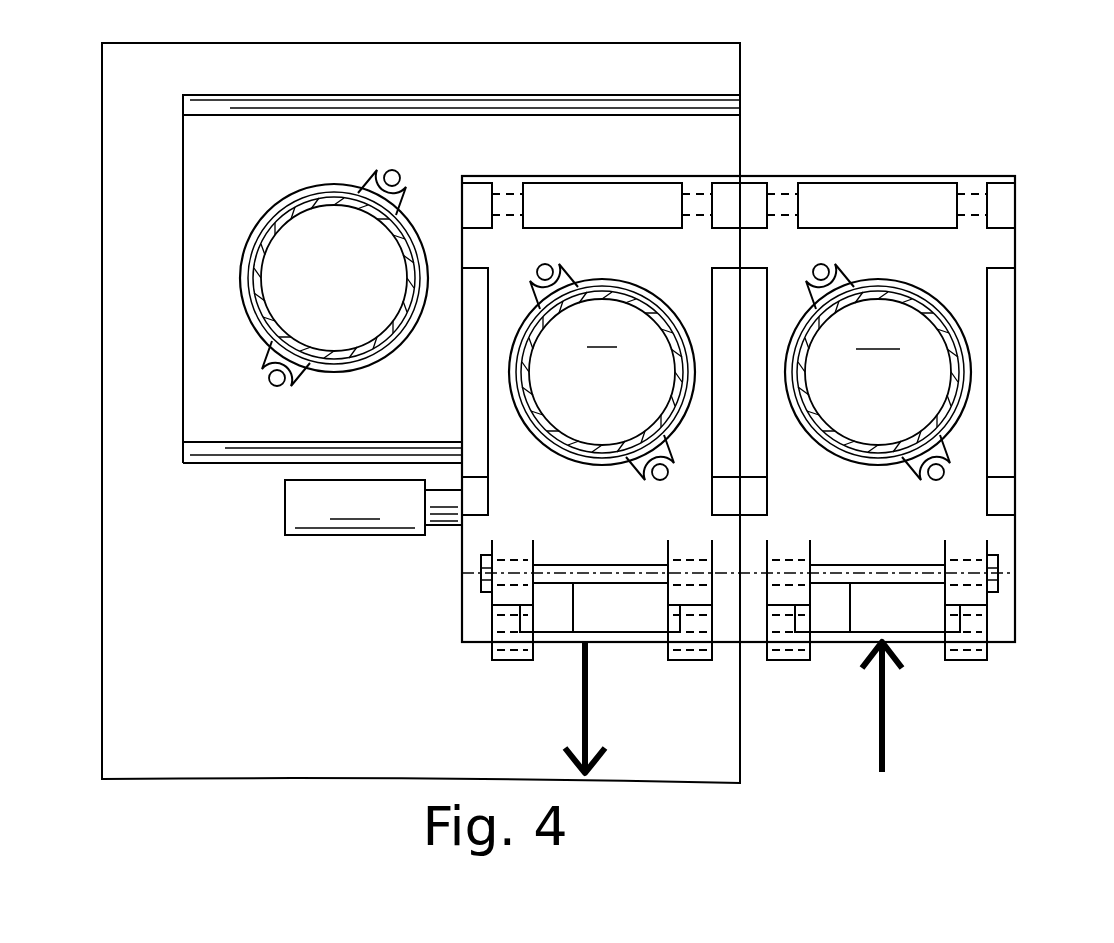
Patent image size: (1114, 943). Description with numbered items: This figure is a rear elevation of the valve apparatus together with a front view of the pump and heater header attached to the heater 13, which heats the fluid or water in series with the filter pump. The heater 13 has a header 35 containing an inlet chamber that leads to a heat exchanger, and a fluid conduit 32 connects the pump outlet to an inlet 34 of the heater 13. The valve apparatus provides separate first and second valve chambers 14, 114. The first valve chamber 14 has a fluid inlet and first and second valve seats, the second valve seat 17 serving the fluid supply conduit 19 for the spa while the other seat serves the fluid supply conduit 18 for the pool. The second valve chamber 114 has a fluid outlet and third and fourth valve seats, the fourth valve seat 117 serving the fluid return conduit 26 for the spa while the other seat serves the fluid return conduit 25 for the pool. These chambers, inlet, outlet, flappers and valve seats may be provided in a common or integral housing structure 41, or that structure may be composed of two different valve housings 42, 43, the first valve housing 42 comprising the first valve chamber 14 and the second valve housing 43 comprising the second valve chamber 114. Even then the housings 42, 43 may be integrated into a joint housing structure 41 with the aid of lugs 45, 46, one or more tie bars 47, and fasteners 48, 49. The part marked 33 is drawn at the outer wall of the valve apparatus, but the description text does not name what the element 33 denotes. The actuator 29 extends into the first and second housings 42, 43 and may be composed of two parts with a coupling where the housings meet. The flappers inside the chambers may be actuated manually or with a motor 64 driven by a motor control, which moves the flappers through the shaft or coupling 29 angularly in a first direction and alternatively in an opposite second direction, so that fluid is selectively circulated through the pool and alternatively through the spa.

The heater 13 is at (320, 689).
The first valve chamber 14 is at (602, 372).
The second valve seat 17 is at (592, 430).
The fluid supply conduit 18 is at (600, 766).
The fluid supply conduit 19 is at (612, 433).
The fluid return conduit 25 is at (885, 768).
The fluid return conduit 26 is at (885, 445).
The actuator 29 is at (445, 530).
The fluid conduit 32 is at (265, 337).
The valve housing 33 is at (1030, 295).
The heater inlet 34 is at (343, 332).
The header 35 is at (207, 462).
The housing structure 41 is at (1030, 645).
The first valve housing 42 is at (640, 643).
The second valve housing 43 is at (828, 648).
The lug 45 is at (953, 605).
The lug 46 is at (522, 553).
The tie bar 47 is at (858, 565).
The fastener 48 is at (993, 558).
The fastener 49 is at (482, 588).
The motor 64 is at (285, 515).
The second valve chamber 114 is at (878, 364).
The fourth valve seat 117 is at (845, 428).